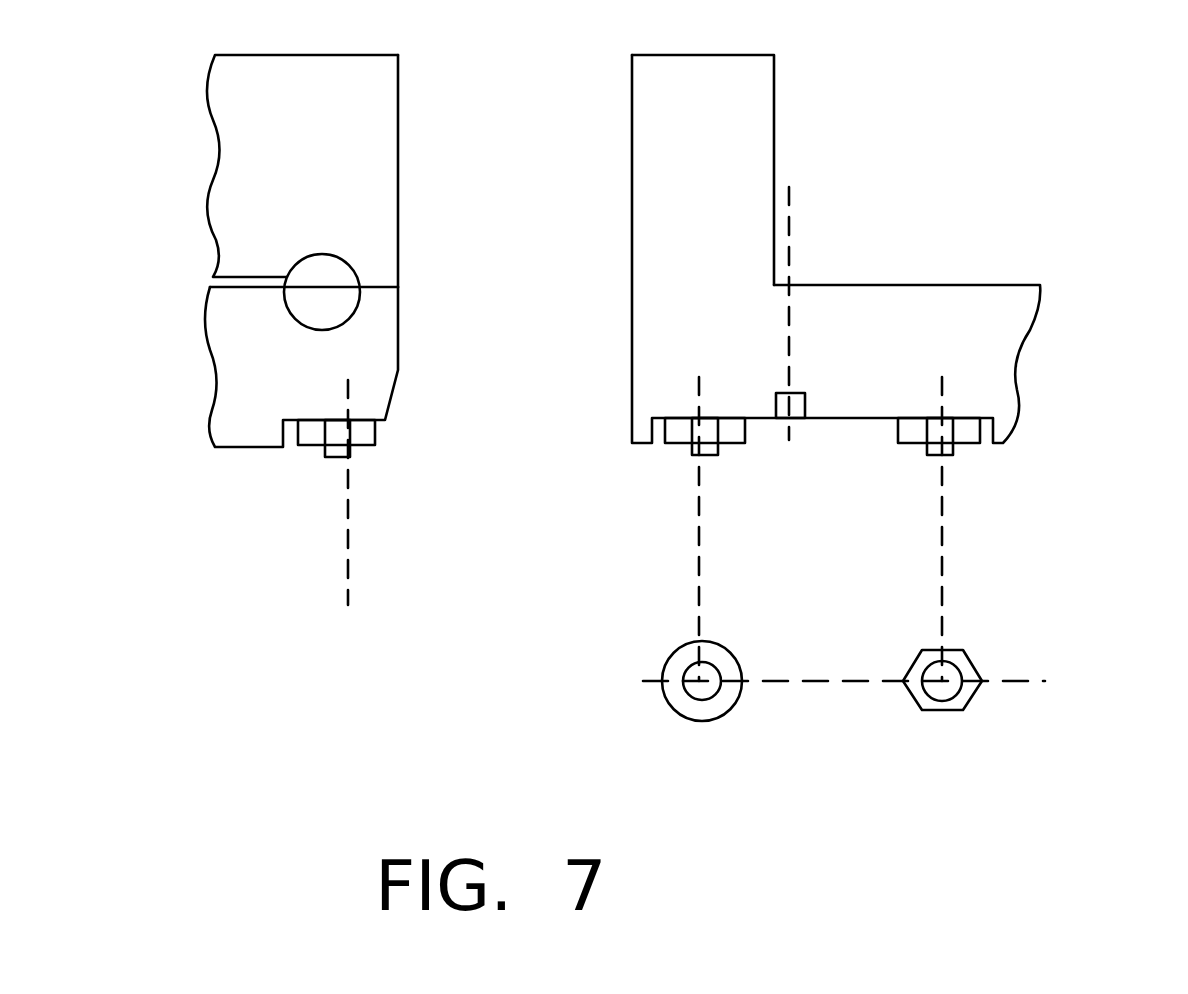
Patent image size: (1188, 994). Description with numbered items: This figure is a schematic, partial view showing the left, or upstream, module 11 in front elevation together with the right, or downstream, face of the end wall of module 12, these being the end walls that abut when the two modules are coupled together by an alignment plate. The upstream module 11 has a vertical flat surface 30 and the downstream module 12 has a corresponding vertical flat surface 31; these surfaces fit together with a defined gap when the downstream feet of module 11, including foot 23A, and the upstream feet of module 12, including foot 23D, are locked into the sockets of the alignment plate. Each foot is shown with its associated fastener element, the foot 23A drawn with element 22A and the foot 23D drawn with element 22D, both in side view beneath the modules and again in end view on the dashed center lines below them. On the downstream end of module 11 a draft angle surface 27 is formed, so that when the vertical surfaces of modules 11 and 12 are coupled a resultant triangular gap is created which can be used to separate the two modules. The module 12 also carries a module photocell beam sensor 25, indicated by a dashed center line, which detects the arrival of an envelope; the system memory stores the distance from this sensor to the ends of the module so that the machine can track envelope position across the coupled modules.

The vertical flat surface 30 is at (398, 130).
The upstream module 11 is at (398, 242).
The draft angle surface 27 is at (395, 376).
The nut D 22D is at (313, 445).
The upstream foot 23D is at (335, 457).
The vertical flat surface 31 is at (632, 102).
The downstream module 12 is at (632, 215).
The module photocell beam sensor 25 is at (790, 197).
The nut A 22A is at (745, 430).
The downstream foot 23A is at (708, 457).